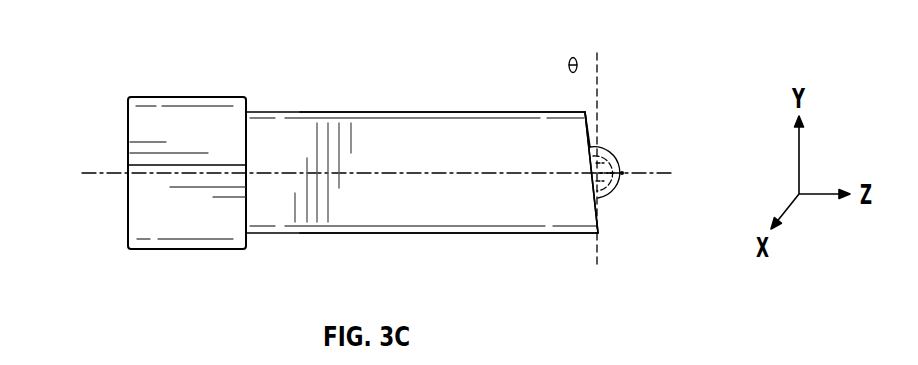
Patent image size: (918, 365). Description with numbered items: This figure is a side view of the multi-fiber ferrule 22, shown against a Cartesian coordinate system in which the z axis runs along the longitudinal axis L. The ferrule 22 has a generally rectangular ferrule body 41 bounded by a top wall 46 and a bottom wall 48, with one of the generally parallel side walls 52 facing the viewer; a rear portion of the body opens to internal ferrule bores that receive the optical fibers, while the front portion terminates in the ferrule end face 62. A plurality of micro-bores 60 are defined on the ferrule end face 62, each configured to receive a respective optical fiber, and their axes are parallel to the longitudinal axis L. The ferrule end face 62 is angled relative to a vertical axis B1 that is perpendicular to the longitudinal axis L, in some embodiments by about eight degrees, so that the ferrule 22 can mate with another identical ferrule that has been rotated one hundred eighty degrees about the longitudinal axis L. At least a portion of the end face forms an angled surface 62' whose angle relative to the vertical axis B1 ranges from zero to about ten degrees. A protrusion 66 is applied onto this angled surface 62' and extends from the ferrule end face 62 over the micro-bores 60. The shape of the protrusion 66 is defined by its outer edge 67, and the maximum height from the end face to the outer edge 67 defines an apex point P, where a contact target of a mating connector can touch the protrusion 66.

The ferrule 22 is at (110, 77).
The ferrule body 41 is at (348, 75).
The top wall 46 is at (495, 110).
The bottom wall 48 is at (494, 235).
The side wall 52 is at (415, 218).
The ferrule end face 62 is at (633, 195).
The angled surface 62' is at (558, 132).
The protrusion 66 is at (624, 124).
The outer edge 67 is at (614, 195).
The micro-bores 60 is at (637, 138).
The longitudinal axis L is at (107, 172).
The vertical axis B1 is at (595, 145).
The apex point P is at (624, 173).